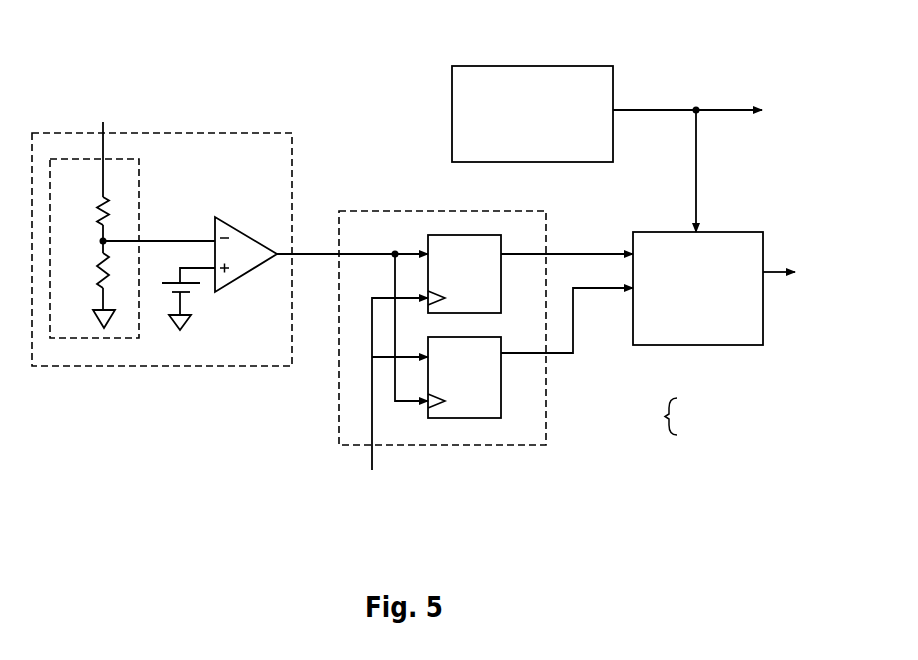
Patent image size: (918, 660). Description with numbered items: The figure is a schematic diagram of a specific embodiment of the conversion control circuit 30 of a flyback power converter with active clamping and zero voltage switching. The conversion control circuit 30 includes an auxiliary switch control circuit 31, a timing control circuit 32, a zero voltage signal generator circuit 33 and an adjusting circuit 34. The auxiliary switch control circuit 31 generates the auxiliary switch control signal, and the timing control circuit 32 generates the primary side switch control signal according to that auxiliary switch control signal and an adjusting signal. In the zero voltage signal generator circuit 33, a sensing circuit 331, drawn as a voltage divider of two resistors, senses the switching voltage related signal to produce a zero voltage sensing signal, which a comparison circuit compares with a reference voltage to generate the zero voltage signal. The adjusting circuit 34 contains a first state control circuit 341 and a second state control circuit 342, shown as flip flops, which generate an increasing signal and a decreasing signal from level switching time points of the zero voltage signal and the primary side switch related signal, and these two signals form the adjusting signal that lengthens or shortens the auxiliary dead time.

The conversion control circuit 30 is at (138, 44).
The auxiliary switch control circuit 31 is at (532, 114).
The timing control circuit 32 is at (698, 288).
The zero voltage signal generator circuit 33 is at (162, 234).
The sensing circuit 331 is at (94, 230).
The adjusting circuit 34 is at (442, 328).
The first state control circuit 341 is at (464, 377).
The second state control circuit 342 is at (464, 274).